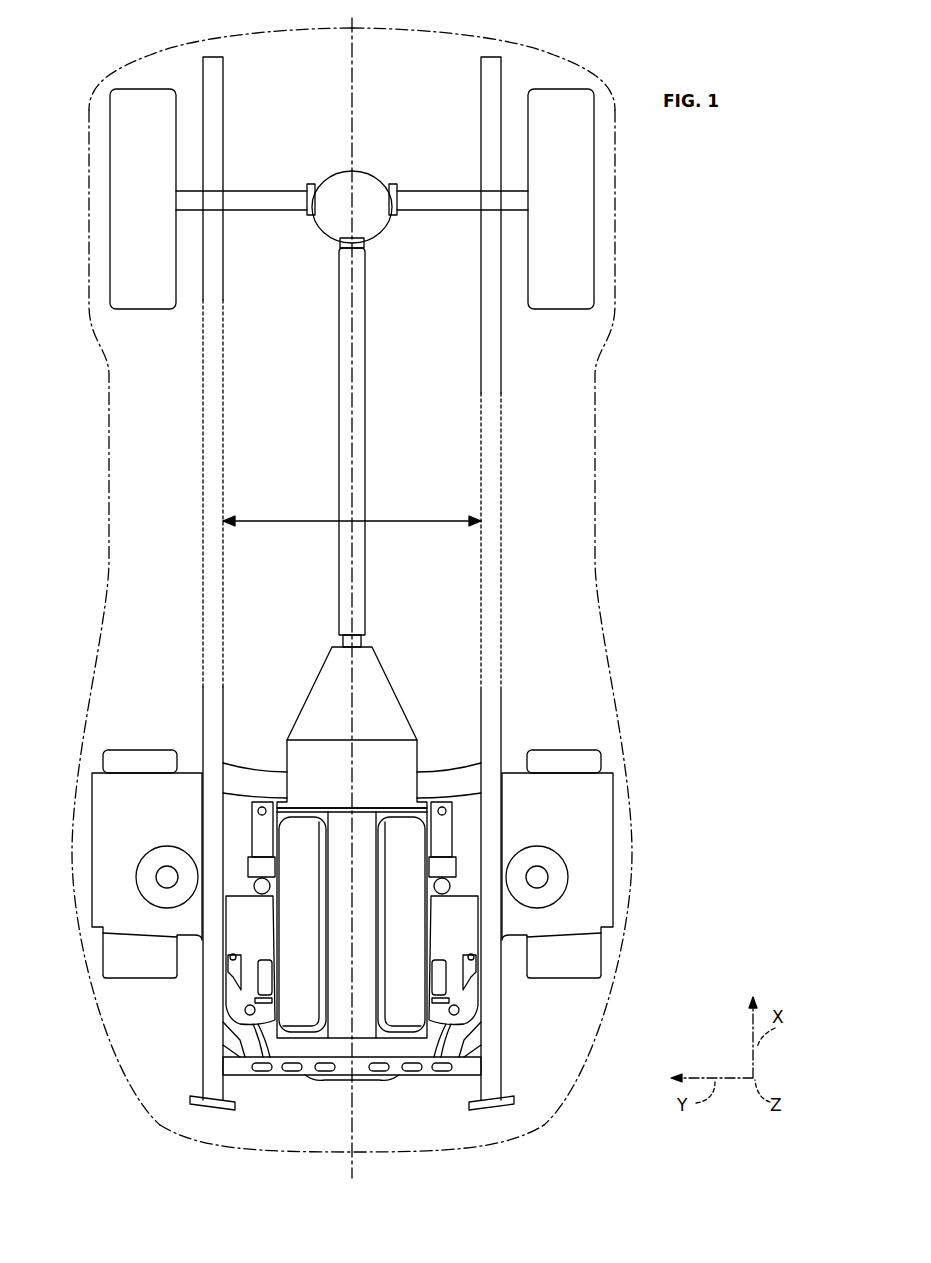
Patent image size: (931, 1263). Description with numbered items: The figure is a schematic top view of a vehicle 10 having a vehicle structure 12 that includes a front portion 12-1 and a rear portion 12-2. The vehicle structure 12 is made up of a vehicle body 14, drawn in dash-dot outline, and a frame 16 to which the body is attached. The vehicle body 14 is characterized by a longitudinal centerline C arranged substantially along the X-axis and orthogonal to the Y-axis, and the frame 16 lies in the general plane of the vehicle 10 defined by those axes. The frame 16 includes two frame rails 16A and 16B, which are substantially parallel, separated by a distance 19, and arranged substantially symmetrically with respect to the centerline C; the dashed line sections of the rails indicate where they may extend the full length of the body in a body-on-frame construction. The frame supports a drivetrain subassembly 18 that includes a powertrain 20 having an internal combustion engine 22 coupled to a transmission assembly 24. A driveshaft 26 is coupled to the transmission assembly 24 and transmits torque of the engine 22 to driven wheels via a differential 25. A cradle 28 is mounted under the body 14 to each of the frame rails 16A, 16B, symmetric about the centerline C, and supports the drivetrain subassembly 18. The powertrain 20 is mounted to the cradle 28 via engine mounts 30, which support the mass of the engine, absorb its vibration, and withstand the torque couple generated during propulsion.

The vehicle 10 is at (626, 422).
The vehicle structure 12 is at (596, 562).
The front portion 12-1 is at (482, 1149).
The rear portion 12-2 is at (553, 51).
The vehicle body 14 is at (617, 165).
The frame 16 is at (502, 606).
The first frame rail 16A is at (496, 708).
The second frame rail 16B is at (218, 707).
The drivetrain subassembly 18 is at (396, 464).
The distance 19 is at (426, 521).
The powertrain 20 is at (385, 668).
The internal combustion engine 22 is at (419, 929).
The transmission assembly 24 is at (394, 776).
The differential 25 is at (376, 190).
The driveshaft 26 is at (366, 305).
The cradle 28 is at (240, 770).
The engine mounts 30 is at (264, 958).
The longitudinal centerline C is at (358, 405).